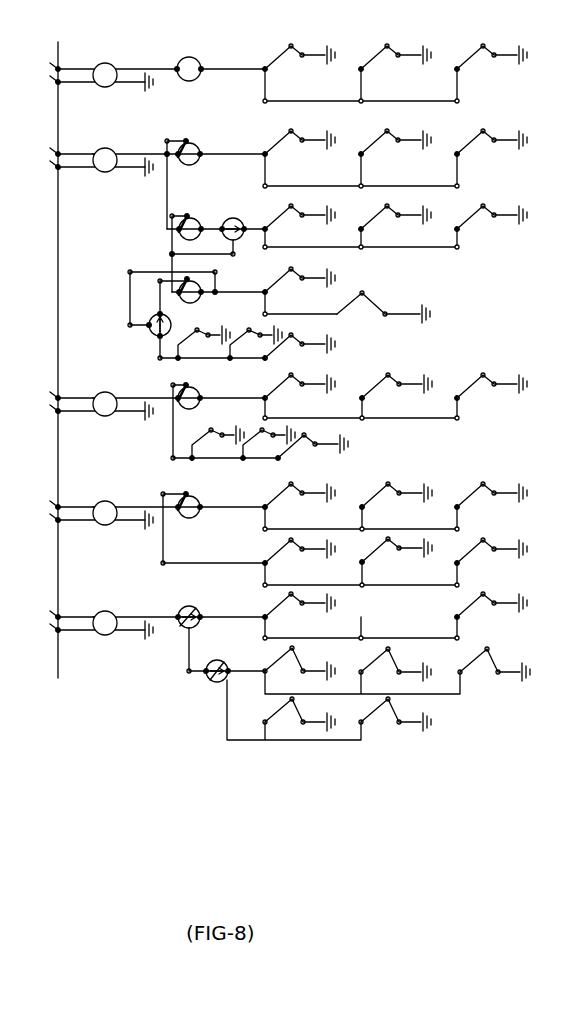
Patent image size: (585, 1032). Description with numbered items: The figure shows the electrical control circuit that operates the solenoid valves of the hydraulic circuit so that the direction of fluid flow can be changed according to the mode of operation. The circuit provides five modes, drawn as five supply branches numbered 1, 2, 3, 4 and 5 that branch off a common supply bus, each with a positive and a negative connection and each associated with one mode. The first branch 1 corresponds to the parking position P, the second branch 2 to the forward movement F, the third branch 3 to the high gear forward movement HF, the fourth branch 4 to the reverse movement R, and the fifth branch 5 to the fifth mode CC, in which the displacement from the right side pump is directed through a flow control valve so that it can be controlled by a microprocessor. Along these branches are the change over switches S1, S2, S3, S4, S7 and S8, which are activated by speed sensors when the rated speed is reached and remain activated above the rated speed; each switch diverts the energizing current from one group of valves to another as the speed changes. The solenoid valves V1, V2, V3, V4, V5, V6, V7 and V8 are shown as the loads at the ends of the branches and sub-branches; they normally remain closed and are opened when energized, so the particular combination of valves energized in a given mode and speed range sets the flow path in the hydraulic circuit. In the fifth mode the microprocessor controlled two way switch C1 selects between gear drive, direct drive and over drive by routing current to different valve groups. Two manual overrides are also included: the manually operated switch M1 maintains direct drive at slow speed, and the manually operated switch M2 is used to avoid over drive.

The power supply 1 is at (140, 74).
The power supply 2 is at (140, 159).
The power supply 3 is at (141, 403).
The power supply 4 is at (138, 512).
The power supply 5 is at (138, 621).
The parking position P is at (141, 84).
The forward movement F is at (86, 175).
The high gear forward movement HF is at (96, 421).
The reverse movement R is at (90, 529).
The fifth mode CC is at (96, 638).
The change over switch S1 is at (197, 184).
The change over switch S2 is at (201, 253).
The change over switch S3 is at (196, 294).
The change over switch S4 is at (224, 421).
The change over switch S7 is at (213, 528).
The change over switch S8 is at (220, 639).
The manually operated switch M1 is at (214, 222).
The manually operated switch M2 is at (191, 317).
The microprocessor controlled two way switch C1 is at (209, 681).
The solenoid valve V1 is at (395, 339).
The solenoid valve V2 is at (304, 369).
The solenoid valve V3 is at (377, 393).
The solenoid valve V4 is at (299, 225).
The solenoid valve V5 is at (305, 402).
The solenoid valve V6 is at (396, 558).
The solenoid valve V7 is at (384, 517).
The solenoid valve V8 is at (494, 670).